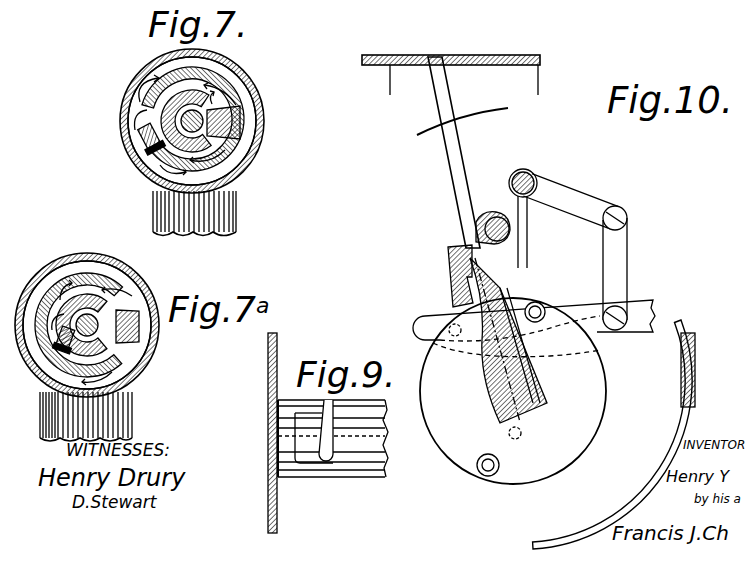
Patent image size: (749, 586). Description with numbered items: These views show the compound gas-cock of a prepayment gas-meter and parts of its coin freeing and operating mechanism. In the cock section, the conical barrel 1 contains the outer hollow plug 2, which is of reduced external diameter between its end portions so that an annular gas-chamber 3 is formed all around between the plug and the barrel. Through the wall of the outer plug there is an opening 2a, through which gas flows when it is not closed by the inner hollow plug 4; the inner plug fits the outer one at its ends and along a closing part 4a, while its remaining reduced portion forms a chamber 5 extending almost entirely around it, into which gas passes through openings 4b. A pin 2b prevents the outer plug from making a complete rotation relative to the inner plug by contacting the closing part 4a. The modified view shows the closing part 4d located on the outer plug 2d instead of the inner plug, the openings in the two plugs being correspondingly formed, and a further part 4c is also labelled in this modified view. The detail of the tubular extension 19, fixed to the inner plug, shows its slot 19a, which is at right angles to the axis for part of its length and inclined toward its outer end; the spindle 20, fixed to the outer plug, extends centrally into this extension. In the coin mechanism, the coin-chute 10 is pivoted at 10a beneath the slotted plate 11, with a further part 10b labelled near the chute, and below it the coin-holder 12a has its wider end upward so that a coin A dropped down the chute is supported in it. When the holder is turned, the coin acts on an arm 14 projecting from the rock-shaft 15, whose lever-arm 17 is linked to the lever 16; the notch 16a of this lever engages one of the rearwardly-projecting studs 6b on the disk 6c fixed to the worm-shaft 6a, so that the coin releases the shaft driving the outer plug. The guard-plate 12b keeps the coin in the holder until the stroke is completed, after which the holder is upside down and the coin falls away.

In FIG. 7, the barrel 1 is at (264, 131).
In FIG. 7A, the barrel 1 is at (133, 372).
In FIG. 7, the outer hollow plug 2 is at (246, 165).
In FIG. 7, the opening 2a is at (144, 122).
In FIG. 7, the pin 2b is at (159, 160).
In FIG. 7A, the outer plug 2d is at (66, 272).
In FIG. 7, the annular gas-chamber 3 is at (250, 108).
In FIG. 7A, the annular gas-chamber 3 is at (55, 280).
In FIG. 7, the inner hollow plug 4 is at (150, 88).
In FIG. 7, the closing part 4a is at (250, 129).
In FIG. 7, the openings 4b is at (225, 100).
In FIG. 7A, the stop 4c is at (134, 298).
In FIG. 7A, the closing part 4d is at (128, 344).
In FIG. 7, the chamber 5 is at (208, 88).
In FIG. 7A, the chamber 5 is at (92, 292).
In FIG. 7, the spindle 20 is at (166, 230).
In FIG. 7A, the spindle 20 is at (130, 352).
In FIG. 9, the tubular extension 19 is at (380, 447).
In FIG. 9, the slot 19a is at (336, 432).
In FIG. 10, the slotted plate 11 is at (464, 56).
In FIG. 10, the coin-chute 10 is at (456, 198).
In FIG. 10, the pivot 10a is at (492, 214).
In FIG. 10, the arc guide 10b is at (455, 114).
In FIG. 10, the rock-shaft 15 is at (530, 170).
In FIG. 10, the lever-arm 17 is at (575, 252).
In FIG. 10, the arm 14 is at (528, 248).
In FIG. 10, the coin A is at (497, 337).
In FIG. 10, the disk 6c is at (513, 391).
In FIG. 10, the worm-shaft 6a is at (534, 322).
In FIG. 10, the rearwardly-projecting studs 6b is at (521, 432).
In FIG. 10, the lever 16 is at (534, 320).
In FIG. 10, the notch 16a is at (600, 358).
In FIG. 10, the coin-holder 12a is at (500, 418).
In FIG. 10, the guard-plate 12b is at (664, 466).